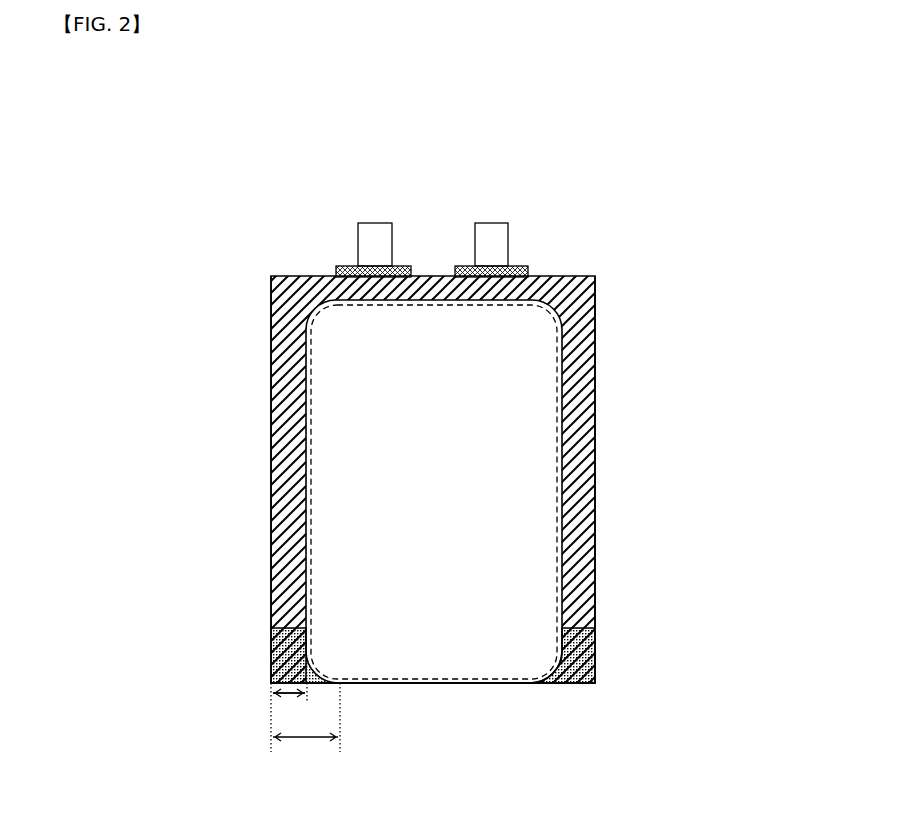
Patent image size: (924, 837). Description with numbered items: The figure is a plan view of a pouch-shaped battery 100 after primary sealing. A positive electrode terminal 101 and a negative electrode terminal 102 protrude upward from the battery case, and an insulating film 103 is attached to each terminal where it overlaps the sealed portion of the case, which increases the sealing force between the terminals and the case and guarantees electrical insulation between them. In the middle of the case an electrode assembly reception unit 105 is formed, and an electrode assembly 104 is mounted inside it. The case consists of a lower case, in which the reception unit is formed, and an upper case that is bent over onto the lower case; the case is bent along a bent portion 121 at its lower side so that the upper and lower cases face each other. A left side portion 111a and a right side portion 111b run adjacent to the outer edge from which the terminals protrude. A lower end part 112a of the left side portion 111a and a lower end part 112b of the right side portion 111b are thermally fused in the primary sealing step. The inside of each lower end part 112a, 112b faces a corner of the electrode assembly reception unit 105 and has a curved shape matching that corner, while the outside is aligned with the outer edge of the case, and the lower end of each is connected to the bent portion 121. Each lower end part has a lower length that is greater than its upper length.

The pouch-shaped battery 100 is at (124, 144).
The positive electrode terminal 101 is at (382, 222).
The negative electrode terminal 102 is at (497, 222).
The insulating film 103 is at (335, 272).
The electrode assembly 104 is at (517, 498).
The electrode assembly reception unit 105 is at (386, 683).
The left side portion 111a is at (250, 408).
The right side portion 111b is at (617, 382).
The left lower end part 112a is at (300, 663).
The right lower end part 112b is at (595, 663).
The bent portion 121 is at (507, 697).